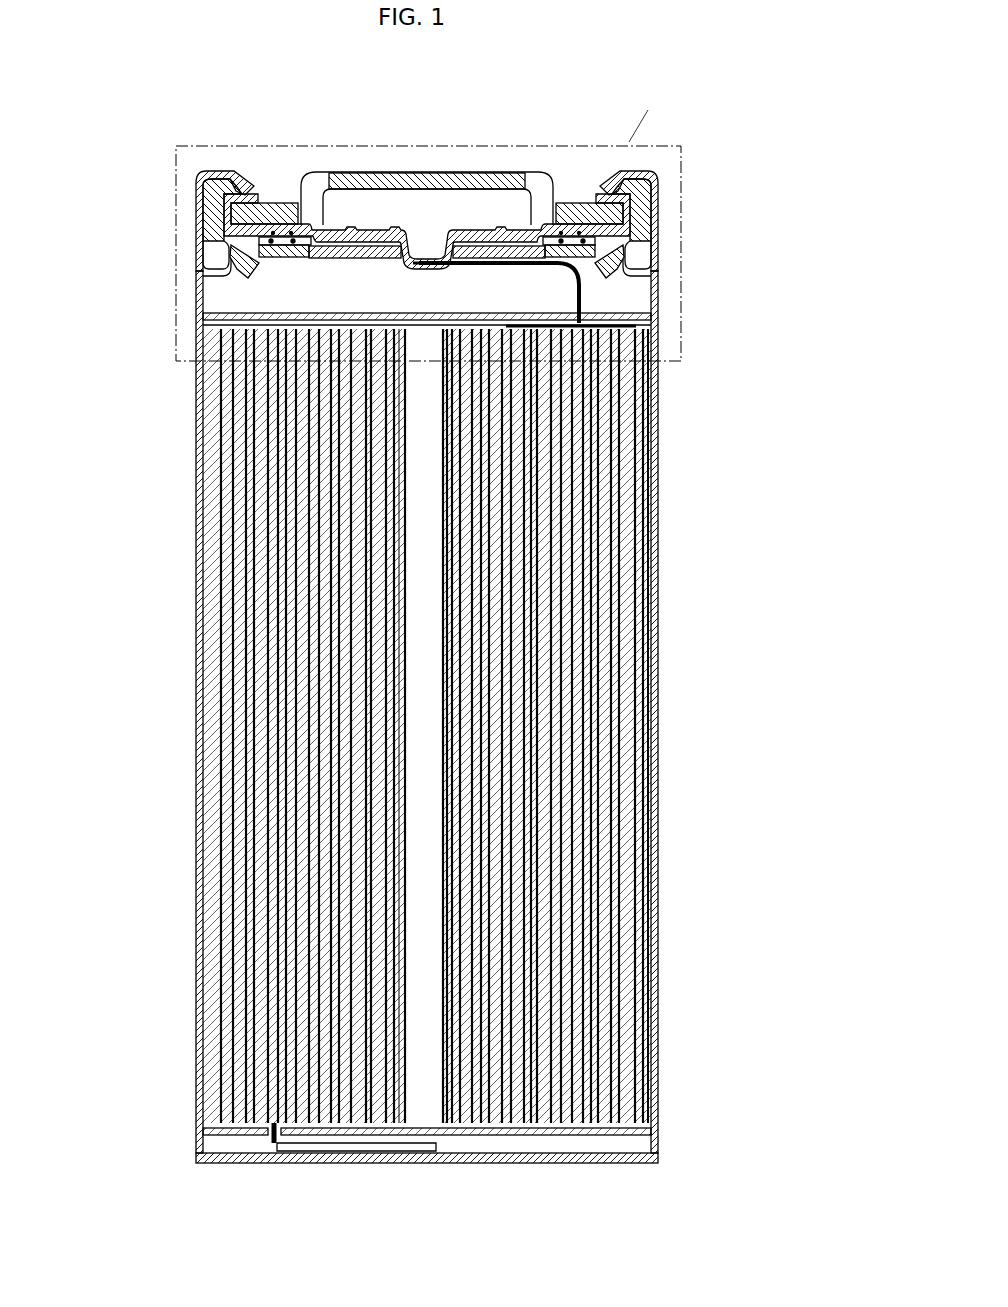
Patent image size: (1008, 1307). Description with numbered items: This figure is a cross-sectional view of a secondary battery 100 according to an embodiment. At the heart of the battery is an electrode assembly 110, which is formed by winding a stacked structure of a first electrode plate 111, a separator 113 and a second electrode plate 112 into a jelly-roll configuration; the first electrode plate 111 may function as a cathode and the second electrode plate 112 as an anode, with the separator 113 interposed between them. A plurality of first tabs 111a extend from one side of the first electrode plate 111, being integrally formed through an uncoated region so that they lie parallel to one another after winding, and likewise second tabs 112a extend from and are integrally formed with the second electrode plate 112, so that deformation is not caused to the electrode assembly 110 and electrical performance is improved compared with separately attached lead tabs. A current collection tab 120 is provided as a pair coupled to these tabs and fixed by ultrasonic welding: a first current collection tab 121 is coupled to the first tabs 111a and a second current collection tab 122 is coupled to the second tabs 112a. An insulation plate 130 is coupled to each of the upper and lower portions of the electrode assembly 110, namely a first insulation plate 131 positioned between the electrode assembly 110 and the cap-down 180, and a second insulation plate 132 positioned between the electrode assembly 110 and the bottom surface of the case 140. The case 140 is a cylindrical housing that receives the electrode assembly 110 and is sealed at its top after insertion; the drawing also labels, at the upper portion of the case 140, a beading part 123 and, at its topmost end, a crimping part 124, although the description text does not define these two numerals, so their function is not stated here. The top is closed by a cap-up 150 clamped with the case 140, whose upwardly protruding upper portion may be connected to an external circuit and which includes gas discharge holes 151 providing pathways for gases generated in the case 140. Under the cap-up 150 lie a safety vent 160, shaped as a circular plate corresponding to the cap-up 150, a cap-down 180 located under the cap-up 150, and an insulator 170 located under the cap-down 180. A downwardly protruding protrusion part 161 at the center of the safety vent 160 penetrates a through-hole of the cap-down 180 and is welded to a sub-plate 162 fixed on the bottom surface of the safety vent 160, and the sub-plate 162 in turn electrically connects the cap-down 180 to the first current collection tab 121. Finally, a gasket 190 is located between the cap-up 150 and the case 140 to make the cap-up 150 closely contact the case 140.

The secondary battery 100 is at (152, 94).
The electrode assembly 110 is at (737, 373).
The first electrode plate 111 is at (630, 445).
The first tabs 111a is at (620, 324).
The second electrode plate 112 is at (645, 372).
The second tabs 112a is at (242, 1137).
The separator 113 is at (640, 406).
The current collection tab 120 is at (822, 618).
The first current collection tab 121 is at (657, 300).
The second current collection tab 122 is at (428, 1165).
The beading part 123 is at (196, 292).
The crimping part 124 is at (652, 178).
The insulation plate 130 is at (103, 418).
The first insulation plate 131 is at (200, 318).
The second insulation plate 132 is at (205, 1122).
The case 140 is at (660, 521).
The cap-up 150 is at (408, 170).
The gas discharge holes 151 is at (317, 170).
The safety vent 160 is at (545, 244).
The protrusion part 161 is at (430, 250).
The sub-plate 162 is at (500, 236).
The insulator 170 is at (270, 236).
The cap-down 180 is at (362, 228).
The gasket 190 is at (630, 212).